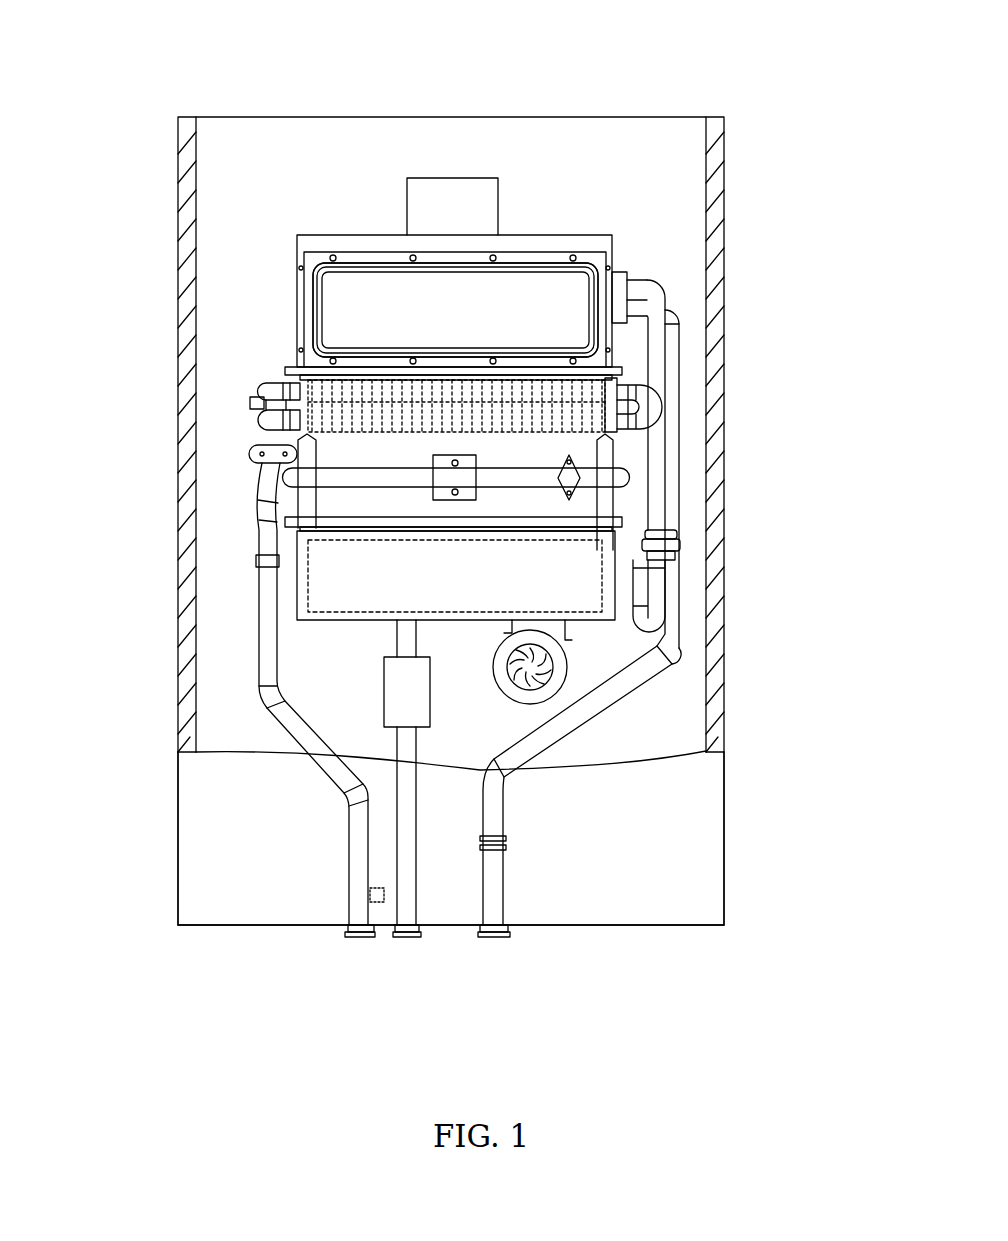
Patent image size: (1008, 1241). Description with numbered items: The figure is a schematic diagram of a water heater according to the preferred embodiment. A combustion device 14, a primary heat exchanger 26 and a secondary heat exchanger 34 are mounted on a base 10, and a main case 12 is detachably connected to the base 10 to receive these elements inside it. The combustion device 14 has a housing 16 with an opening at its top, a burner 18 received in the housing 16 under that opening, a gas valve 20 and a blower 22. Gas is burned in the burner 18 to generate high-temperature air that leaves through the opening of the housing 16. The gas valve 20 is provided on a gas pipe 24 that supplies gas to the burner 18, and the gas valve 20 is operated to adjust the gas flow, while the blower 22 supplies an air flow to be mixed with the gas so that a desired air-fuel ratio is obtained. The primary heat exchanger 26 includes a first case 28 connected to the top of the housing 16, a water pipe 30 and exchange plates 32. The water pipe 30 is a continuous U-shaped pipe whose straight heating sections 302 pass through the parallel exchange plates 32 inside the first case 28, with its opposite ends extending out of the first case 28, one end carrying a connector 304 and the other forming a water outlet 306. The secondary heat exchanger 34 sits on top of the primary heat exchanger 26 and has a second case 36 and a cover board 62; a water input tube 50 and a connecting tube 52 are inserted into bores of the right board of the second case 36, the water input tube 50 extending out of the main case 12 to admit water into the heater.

The base 10 is at (600, 142).
The main case 12 is at (608, 890).
The combustion device 14 is at (298, 638).
The housing 16 is at (300, 597).
The burner 18 is at (306, 582).
The gas valve 20 is at (397, 690).
The blower 22 is at (570, 676).
The gas pipe 24 is at (413, 868).
The primary heat exchanger 26 is at (232, 456).
The first case 28 is at (332, 503).
The water pipe 30 is at (645, 480).
The exchange plates 32 is at (300, 377).
The secondary heat exchanger 34 is at (252, 292).
The second case 36 is at (316, 231).
The water input tube 50 is at (603, 702).
The connecting tube 52 is at (655, 365).
The cover board 62 is at (360, 287).
The heating sections 302 is at (300, 412).
The connector 304 is at (662, 548).
The water outlet 306 is at (358, 940).